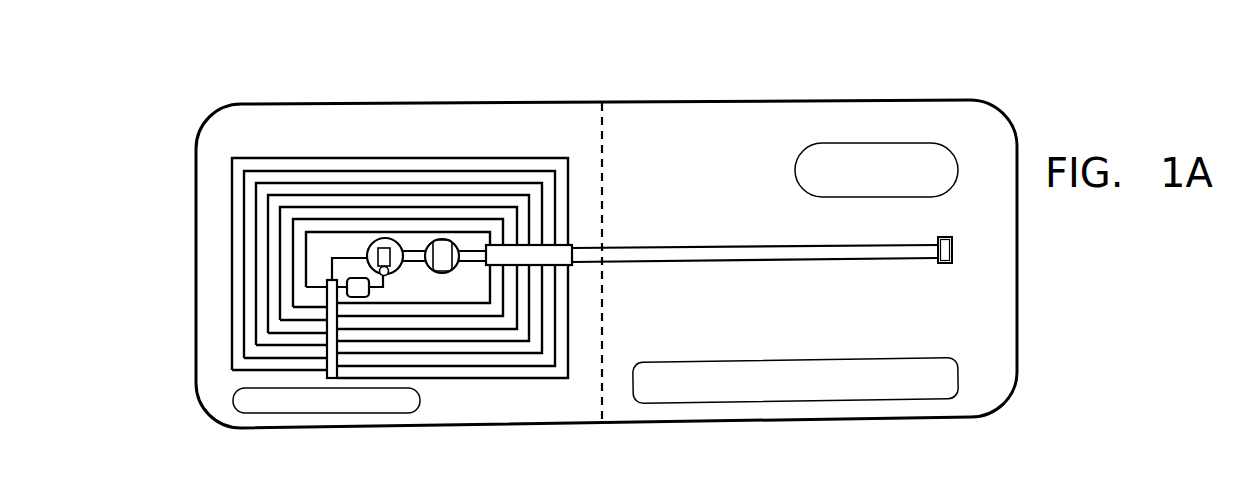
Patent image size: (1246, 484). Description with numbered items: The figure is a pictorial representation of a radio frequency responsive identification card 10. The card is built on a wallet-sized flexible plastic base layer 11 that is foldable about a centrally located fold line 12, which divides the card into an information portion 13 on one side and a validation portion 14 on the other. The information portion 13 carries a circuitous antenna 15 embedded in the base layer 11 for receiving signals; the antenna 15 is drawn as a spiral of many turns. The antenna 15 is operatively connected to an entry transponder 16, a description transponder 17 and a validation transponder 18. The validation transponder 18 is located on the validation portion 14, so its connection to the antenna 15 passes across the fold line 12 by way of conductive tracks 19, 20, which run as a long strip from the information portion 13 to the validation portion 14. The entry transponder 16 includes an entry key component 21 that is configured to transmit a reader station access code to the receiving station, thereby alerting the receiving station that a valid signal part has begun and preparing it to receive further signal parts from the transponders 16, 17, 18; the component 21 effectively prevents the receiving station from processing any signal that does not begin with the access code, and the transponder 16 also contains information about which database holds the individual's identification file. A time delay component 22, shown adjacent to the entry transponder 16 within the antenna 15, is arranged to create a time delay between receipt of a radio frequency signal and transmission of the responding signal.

The radio frequency responsive identification card 10 is at (1008, 67).
The flexible plastic base layer 11 is at (537, 103).
The fold line 12 is at (601, 103).
The information portion 13 is at (300, 103).
The validation portion 14 is at (770, 102).
The circuitous antenna 15 is at (237, 153).
The entry transponder 16 is at (385, 232).
The description transponder 17 is at (452, 232).
The validation transponder 18 is at (947, 235).
The conductive track 19 is at (724, 262).
The conductive track 20 is at (767, 250).
The entry key component 21 is at (395, 282).
The time delay component 22 is at (365, 300).